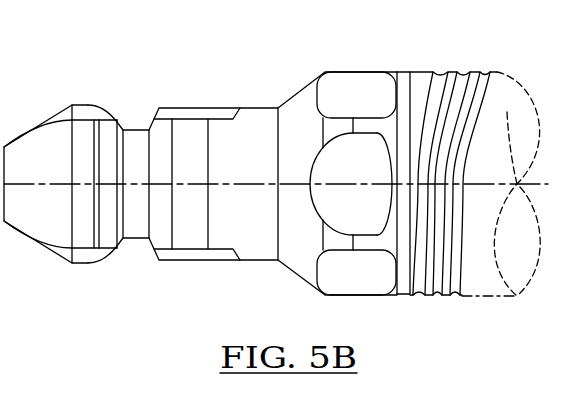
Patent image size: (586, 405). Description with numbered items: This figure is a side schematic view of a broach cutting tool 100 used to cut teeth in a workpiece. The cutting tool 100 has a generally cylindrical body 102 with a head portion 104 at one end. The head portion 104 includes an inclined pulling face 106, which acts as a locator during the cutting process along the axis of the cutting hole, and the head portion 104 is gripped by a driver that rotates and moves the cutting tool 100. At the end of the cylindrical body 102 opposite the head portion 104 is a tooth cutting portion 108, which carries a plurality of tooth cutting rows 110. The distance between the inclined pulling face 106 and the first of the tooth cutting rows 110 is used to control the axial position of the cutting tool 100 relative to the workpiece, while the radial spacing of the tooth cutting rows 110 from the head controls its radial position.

The cutting tool 100 is at (276, 190).
The cylindrical body 102 is at (252, 143).
The head portion 104 is at (52, 203).
The inclined pulling face 106 is at (103, 257).
The tooth cutting portion 108 is at (507, 112).
The tooth cutting rows 110 is at (452, 82).